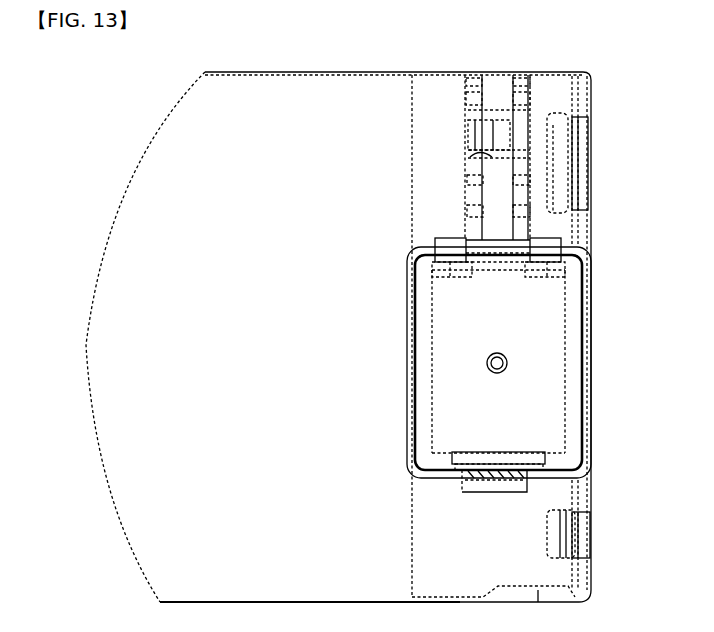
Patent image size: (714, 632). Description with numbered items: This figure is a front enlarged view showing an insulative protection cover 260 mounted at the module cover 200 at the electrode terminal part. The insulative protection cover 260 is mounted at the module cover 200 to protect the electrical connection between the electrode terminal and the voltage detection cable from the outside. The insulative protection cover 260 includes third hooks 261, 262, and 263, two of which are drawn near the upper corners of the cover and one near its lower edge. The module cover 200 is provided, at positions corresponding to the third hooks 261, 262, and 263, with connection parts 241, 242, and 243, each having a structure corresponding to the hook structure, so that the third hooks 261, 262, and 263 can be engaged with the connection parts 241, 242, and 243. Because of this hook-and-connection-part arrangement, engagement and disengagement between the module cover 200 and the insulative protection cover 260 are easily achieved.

The module cover 200 is at (138, 327).
The insulative protection cover 260 is at (540, 368).
The connection part 241 is at (547, 250).
The connection part 242 is at (447, 250).
The connection part 243 is at (468, 490).
The third hook 261 is at (548, 278).
The third hook 262 is at (448, 278).
The third hook 263 is at (492, 452).